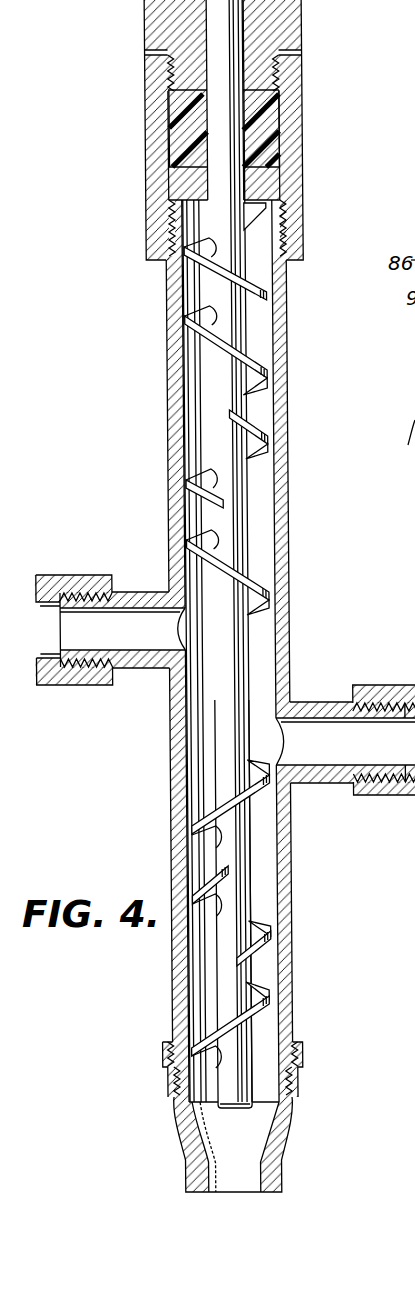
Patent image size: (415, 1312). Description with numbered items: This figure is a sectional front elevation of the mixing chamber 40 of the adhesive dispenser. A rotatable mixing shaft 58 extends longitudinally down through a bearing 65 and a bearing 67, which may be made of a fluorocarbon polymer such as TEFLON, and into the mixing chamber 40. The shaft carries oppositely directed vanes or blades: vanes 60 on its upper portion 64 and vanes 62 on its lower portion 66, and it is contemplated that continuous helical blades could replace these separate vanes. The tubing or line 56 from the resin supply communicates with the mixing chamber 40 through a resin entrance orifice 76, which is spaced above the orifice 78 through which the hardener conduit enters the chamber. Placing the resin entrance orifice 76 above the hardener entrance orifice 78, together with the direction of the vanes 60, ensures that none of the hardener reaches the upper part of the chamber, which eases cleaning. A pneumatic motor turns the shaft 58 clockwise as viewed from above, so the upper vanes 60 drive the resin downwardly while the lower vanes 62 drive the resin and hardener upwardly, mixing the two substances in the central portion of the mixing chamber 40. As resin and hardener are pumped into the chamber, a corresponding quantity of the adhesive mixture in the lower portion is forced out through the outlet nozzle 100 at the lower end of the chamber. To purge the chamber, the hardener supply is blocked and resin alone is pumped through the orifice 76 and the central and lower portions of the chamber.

The mixing chamber 40 is at (293, 484).
The tubing or line 56 is at (46, 582).
The rotatable shaft 58 is at (387, 688).
The vanes 60 is at (199, 473).
The vanes 62 is at (256, 933).
The upper portion of the shaft 64 is at (236, 200).
The bearing 65 is at (297, 25).
The lower portion of the shaft 66 is at (236, 1083).
The bearing 67 is at (192, 135).
The resin entrance orifice 76 is at (183, 637).
The hardener entrance orifice 78 is at (275, 740).
The outlet nozzle 100 is at (208, 1162).